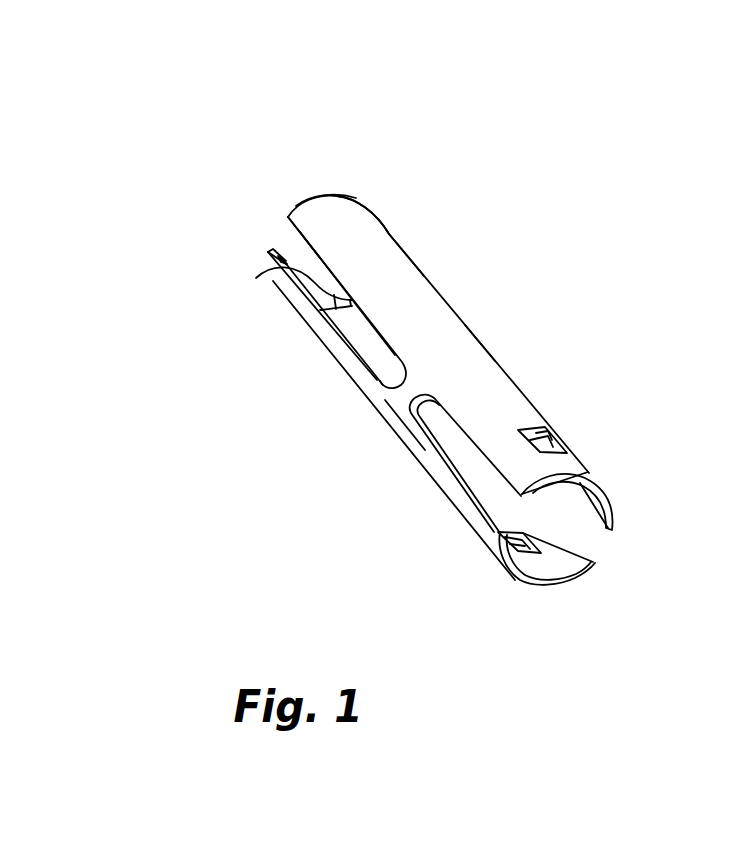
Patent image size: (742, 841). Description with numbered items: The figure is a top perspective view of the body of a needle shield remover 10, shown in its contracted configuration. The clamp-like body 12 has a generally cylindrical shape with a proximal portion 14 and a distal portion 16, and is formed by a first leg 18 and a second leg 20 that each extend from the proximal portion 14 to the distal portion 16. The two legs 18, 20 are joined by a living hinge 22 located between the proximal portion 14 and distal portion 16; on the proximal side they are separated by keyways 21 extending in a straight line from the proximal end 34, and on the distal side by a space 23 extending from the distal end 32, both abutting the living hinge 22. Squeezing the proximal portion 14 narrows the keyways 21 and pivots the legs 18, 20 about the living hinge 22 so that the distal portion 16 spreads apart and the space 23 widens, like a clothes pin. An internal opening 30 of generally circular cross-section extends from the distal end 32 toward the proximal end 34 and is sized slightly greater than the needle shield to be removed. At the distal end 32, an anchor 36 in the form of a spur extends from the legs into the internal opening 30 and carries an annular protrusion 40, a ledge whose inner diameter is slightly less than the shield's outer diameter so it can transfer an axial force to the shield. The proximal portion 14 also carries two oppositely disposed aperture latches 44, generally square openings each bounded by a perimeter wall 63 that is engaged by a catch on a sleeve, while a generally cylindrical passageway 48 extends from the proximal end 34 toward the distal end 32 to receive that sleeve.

The needle shield remover 10 is at (198, 174).
The body 12 is at (474, 281).
The proximal portion 14 is at (483, 341).
The distal portion 16 is at (403, 243).
The first leg 18 is at (328, 213).
The second leg 20 is at (281, 291).
The keyways 21 is at (462, 483).
The living hinge 22 is at (382, 413).
The space 23 is at (352, 328).
The internal opening 30 is at (279, 210).
The distal end 32 is at (350, 197).
The proximal end 34 is at (528, 592).
The anchor 36 is at (283, 259).
The annular protrusion 40 is at (300, 270).
The aperture latches 44 is at (546, 442).
The passageway 48 is at (590, 598).
The perimeter wall 63 is at (540, 430).